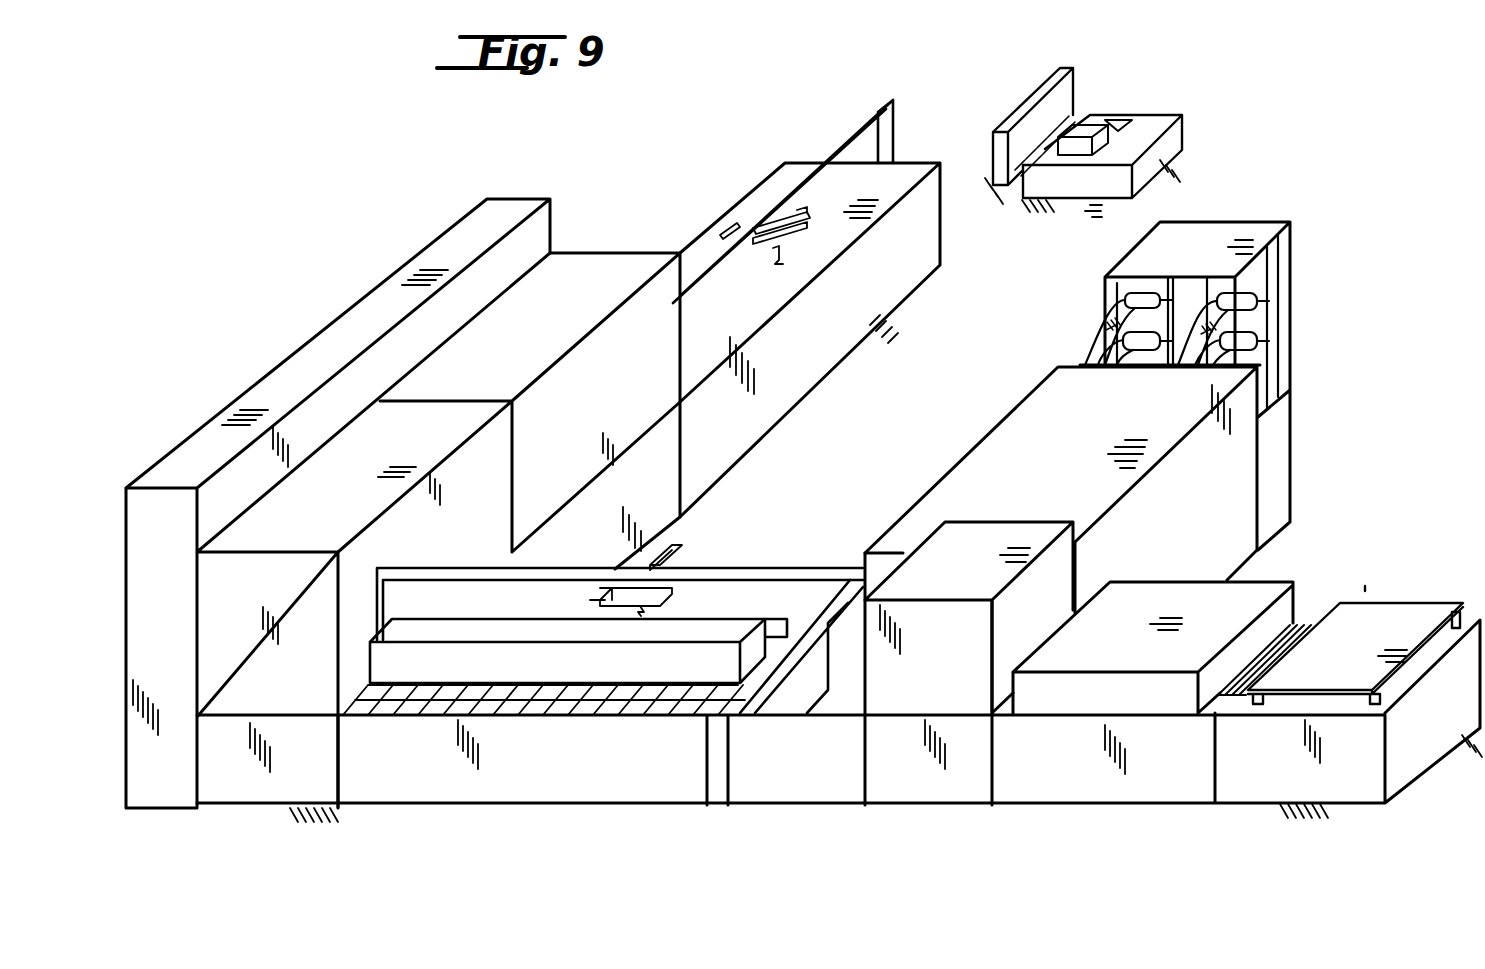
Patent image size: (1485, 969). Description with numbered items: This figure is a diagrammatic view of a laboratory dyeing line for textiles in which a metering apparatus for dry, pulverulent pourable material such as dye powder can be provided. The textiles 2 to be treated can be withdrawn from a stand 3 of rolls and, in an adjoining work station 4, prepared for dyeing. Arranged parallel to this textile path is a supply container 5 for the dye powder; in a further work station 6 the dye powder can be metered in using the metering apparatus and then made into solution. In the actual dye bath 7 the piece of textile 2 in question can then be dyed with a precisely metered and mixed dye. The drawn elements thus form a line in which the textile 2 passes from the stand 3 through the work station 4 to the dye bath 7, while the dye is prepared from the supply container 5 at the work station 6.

The textiles 2 is at (1108, 343).
The stand of rolls 3 is at (1195, 235).
The work station 4 is at (1020, 428).
The supply container 5 is at (778, 393).
The work station 6 is at (650, 508).
The dye bath 7 is at (577, 790).